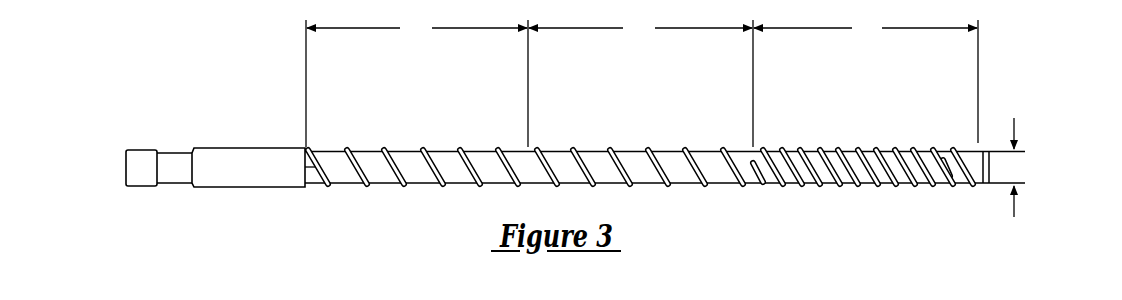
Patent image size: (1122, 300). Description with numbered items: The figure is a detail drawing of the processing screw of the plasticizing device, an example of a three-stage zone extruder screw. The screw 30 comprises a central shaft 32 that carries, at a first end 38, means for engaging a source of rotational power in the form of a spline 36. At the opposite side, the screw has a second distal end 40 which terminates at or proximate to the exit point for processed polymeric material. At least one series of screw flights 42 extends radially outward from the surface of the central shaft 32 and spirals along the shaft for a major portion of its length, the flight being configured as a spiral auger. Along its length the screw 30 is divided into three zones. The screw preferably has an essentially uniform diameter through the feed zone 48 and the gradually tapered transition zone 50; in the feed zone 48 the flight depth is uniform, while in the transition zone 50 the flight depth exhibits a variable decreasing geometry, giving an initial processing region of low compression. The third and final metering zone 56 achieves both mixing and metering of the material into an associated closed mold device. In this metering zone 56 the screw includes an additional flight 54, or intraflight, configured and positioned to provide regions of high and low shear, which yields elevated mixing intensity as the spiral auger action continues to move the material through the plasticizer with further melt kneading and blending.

The screw 30 is at (809, 108).
The central shaft 32 is at (338, 144).
The spline 36 is at (252, 147).
The first end 38 is at (124, 148).
The second distal end 40 is at (1014, 124).
The screw flights 42 is at (502, 150).
The feed zone 48 is at (417, 82).
The transition zone 50 is at (641, 82).
The additional flight 54 is at (800, 184).
The metering zone 56 is at (866, 80).